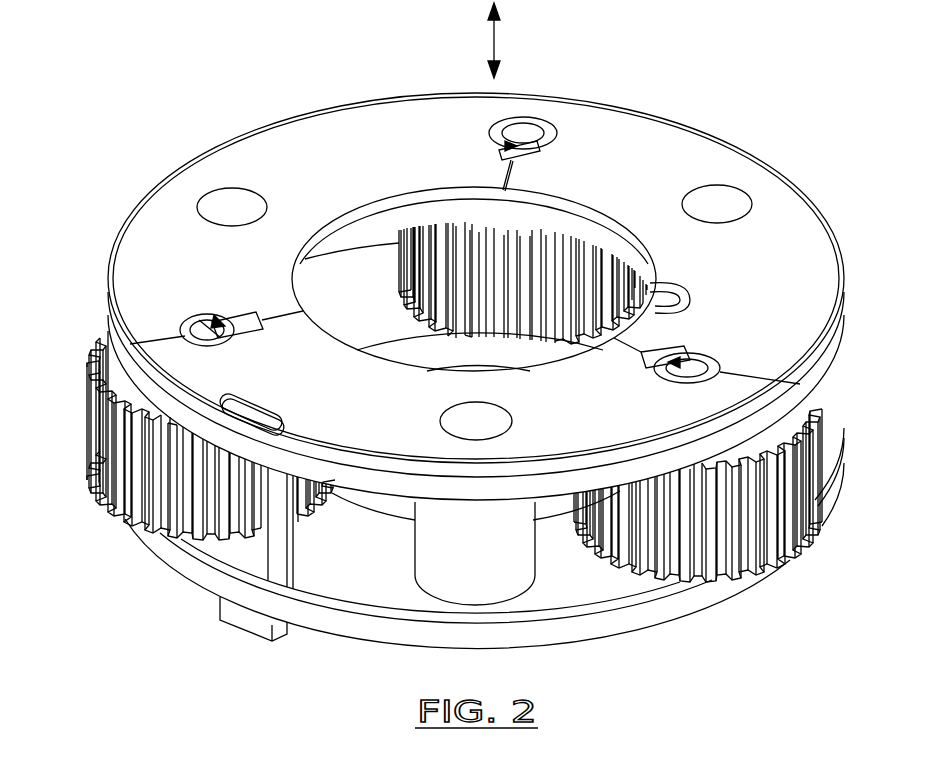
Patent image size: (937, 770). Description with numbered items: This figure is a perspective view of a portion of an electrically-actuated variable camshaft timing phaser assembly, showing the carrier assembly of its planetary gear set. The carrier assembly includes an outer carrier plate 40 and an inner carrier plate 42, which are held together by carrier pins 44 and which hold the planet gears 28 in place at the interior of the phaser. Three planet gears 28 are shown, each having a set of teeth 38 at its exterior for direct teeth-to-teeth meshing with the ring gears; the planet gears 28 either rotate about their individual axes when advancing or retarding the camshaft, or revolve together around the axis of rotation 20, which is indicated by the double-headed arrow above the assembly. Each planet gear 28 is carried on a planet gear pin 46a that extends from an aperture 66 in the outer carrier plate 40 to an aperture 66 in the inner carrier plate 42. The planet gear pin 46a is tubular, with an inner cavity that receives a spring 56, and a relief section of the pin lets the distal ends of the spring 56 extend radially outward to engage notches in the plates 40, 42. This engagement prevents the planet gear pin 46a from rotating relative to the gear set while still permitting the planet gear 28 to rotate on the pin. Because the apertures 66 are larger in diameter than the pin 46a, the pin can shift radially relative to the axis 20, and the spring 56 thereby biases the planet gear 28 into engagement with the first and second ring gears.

The axis 20 is at (496, 37).
The planet gear 28 is at (464, 328).
The set of teeth 38 is at (107, 462).
The outer carrier plate 40 is at (705, 163).
The inner carrier plate 42 is at (320, 633).
The carrier pin 44 is at (223, 203).
The planet gear pin 46a is at (538, 120).
The spring 56 is at (498, 126).
The aperture 66 is at (520, 117).